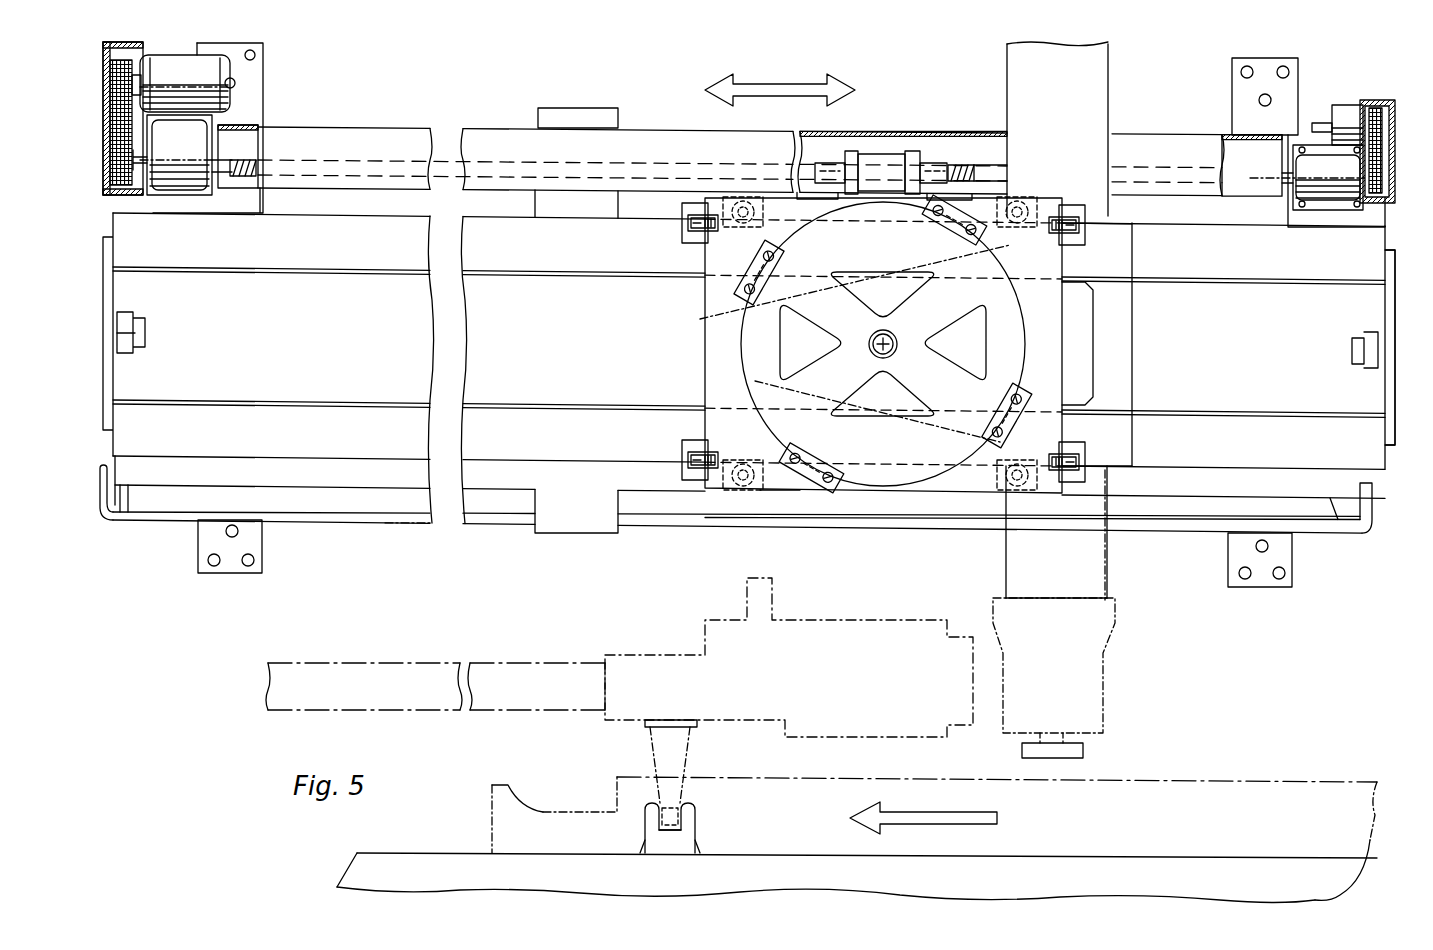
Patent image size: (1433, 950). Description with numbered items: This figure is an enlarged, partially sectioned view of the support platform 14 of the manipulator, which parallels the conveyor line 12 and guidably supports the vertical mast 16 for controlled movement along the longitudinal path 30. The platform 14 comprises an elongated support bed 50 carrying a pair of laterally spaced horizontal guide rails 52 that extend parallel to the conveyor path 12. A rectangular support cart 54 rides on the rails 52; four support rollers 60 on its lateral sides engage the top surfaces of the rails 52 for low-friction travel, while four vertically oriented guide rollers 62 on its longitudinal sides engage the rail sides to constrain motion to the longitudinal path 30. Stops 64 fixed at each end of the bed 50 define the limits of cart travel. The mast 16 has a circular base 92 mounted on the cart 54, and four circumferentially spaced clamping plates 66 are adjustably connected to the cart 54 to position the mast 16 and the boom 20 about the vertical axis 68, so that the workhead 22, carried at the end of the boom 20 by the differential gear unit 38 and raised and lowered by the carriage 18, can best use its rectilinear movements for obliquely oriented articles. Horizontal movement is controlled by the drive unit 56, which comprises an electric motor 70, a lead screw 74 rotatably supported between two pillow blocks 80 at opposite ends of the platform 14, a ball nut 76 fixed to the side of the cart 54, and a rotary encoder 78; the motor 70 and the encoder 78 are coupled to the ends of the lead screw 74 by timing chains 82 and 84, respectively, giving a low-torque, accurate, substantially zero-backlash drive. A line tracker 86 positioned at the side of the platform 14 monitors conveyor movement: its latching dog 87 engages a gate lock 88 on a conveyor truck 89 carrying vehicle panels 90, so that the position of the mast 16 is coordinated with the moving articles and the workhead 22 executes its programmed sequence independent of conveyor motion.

The conveyor line 12 is at (997, 814).
The support platform 14 is at (1350, 474).
The vertical mast 16 is at (1138, 336).
The carriage 18 is at (762, 380).
The boom 20 is at (1110, 580).
The workhead 22 is at (1085, 750).
The longitudinal path 30 is at (770, 83).
The differential gear unit 38 is at (1106, 668).
The support bed 50 is at (1363, 405).
The guide rails 52 is at (1232, 250).
The support cart 54 is at (777, 490).
The drive unit 56 is at (238, 113).
The support rollers 60 is at (685, 226).
The guide rollers 62 is at (738, 198).
The stops 64 is at (135, 333).
The clamping plates 66 is at (945, 228).
The vertical axis 68 is at (869, 344).
The electric motor 70 is at (195, 75).
The lead screw 74 is at (252, 168).
The ball nut 76 is at (885, 157).
The rotary encoder 78 is at (1345, 112).
The pillow blocks 80 is at (190, 195).
The timing chain 82 is at (125, 195).
The timing chain 84 is at (1377, 108).
The line tracker 86 is at (645, 658).
The latching dog 87 is at (652, 748).
The gate lock 88 is at (645, 840).
The conveyor truck 89 is at (1305, 874).
The vehicle panels 90 is at (1300, 790).
The circular base 92 is at (745, 346).